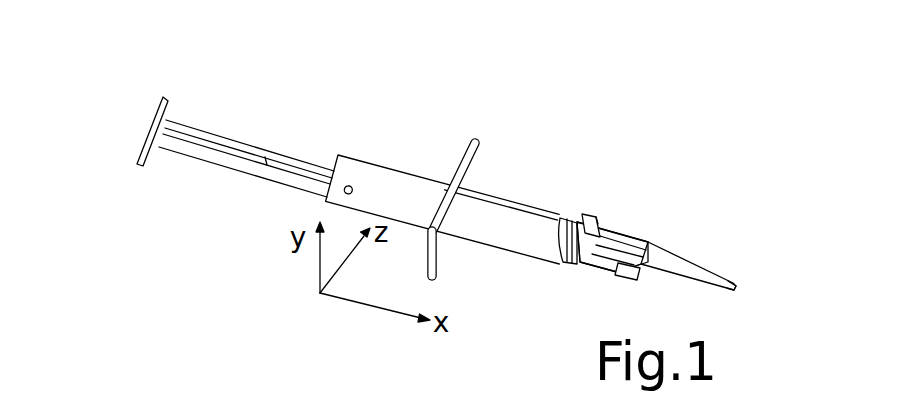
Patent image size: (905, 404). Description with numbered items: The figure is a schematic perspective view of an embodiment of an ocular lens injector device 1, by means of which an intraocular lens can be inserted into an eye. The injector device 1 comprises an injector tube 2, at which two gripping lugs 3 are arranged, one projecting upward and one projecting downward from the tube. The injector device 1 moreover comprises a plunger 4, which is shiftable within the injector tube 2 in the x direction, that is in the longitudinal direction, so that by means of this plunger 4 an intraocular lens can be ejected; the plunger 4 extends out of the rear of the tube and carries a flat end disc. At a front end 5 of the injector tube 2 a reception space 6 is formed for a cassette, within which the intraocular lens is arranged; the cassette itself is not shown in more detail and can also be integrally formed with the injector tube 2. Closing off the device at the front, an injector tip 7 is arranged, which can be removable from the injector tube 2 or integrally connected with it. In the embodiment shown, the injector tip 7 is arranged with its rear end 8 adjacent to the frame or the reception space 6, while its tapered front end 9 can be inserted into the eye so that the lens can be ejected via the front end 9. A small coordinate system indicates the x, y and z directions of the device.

The ocular lens injector device 1 is at (469, 170).
The injector tube 2 is at (522, 228).
The gripping lugs 3 is at (458, 158).
The plunger 4 is at (217, 148).
The front end 5 is at (578, 205).
The reception space 6 is at (623, 235).
The injector tip 7 is at (684, 258).
The rear end 8 is at (663, 232).
The front end 9 is at (733, 280).